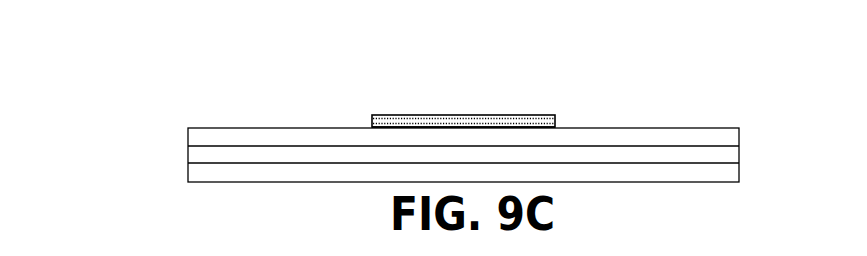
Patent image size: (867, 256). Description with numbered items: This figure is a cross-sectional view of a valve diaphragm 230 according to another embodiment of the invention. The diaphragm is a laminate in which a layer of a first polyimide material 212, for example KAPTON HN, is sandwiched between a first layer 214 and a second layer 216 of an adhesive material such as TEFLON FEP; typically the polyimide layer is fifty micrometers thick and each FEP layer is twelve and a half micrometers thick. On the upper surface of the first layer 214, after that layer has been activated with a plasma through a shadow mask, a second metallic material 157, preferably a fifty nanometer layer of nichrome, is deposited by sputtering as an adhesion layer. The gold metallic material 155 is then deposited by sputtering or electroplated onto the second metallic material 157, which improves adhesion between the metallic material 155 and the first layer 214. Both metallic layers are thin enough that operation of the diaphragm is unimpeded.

The valve diaphragm 230 is at (133, 53).
The first polyimide material layer 212 is at (740, 152).
The first layer of adhesive material 214 is at (187, 137).
The second layer of adhesive material 216 is at (187, 181).
The metallic material 155 is at (420, 115).
The second metallic material 157 is at (557, 126).